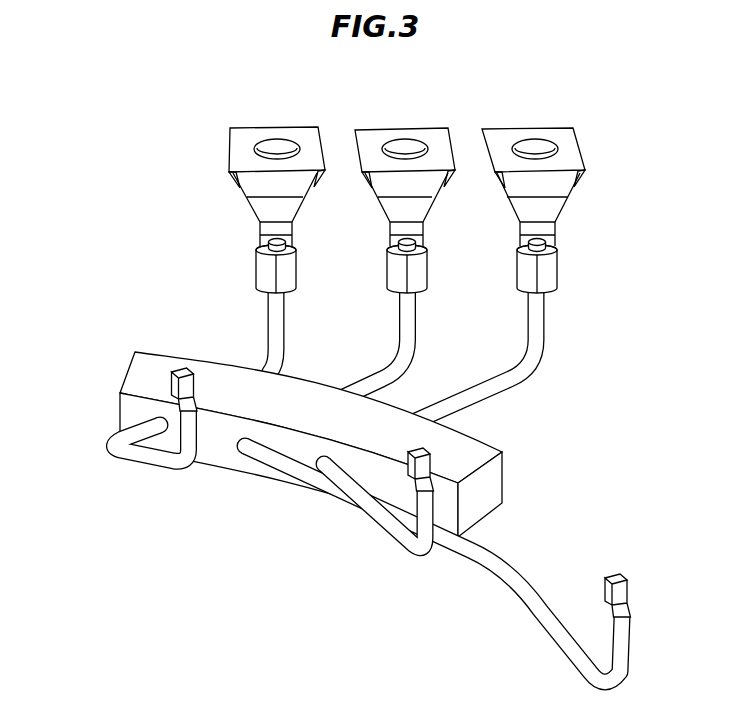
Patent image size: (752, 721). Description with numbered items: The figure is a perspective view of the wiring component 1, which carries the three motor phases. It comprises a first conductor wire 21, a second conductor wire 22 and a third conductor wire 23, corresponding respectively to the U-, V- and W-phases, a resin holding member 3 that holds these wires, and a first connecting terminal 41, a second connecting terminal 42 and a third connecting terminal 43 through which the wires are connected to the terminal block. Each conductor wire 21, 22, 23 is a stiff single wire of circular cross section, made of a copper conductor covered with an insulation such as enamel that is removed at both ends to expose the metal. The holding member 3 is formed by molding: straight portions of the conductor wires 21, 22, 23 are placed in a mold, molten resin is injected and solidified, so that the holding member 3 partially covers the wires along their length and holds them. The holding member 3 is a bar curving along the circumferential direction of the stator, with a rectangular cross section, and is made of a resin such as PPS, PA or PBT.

The wiring component 1 is at (372, 379).
The holding member 3 is at (158, 353).
The first conductor wire 21 is at (538, 325).
The second conductor wire 22 is at (407, 325).
The third conductor wire 23 is at (279, 323).
The first connecting terminal 41 is at (560, 135).
The second connecting terminal 42 is at (428, 133).
The third connecting terminal 43 is at (295, 133).